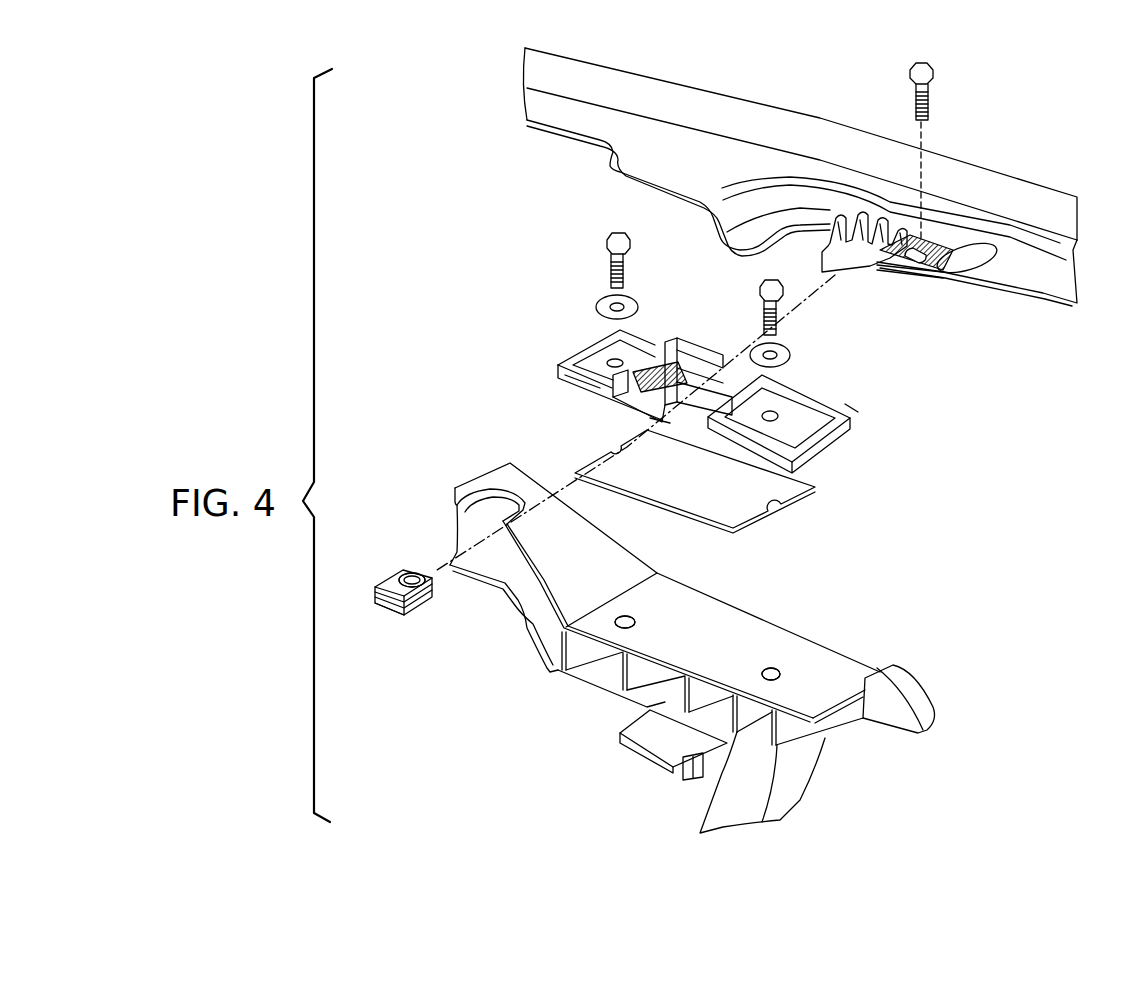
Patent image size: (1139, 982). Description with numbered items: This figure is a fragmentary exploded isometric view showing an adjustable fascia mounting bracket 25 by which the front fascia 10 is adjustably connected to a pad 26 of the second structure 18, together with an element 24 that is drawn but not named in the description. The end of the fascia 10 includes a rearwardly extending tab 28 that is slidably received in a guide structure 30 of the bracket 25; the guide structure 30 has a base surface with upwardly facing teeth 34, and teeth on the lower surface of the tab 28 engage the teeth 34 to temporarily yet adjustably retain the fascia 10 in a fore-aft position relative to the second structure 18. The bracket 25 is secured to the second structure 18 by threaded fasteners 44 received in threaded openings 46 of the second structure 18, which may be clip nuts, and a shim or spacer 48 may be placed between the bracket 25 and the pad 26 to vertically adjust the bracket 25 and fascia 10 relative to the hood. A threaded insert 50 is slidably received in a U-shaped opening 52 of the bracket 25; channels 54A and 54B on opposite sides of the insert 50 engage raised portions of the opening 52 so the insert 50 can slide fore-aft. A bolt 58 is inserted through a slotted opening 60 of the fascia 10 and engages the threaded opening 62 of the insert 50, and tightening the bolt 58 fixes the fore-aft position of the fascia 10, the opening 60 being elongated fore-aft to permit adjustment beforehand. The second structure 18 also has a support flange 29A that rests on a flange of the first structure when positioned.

The fascia 10 is at (1007, 174).
The second structure 18 is at (928, 688).
The mounting block 24 is at (612, 360).
The bracket 25 is at (843, 404).
The pad 26 is at (715, 625).
The tab 28 is at (838, 278).
The support flange 29A is at (683, 770).
The guide structure 30 is at (625, 404).
The teeth 34 is at (683, 358).
The threaded fasteners 44 is at (600, 240).
The threaded openings 46 is at (622, 624).
The shim 48 is at (815, 487).
The threaded insert 50 is at (410, 620).
The U-shaped opening 52 is at (650, 424).
The channel 54A is at (430, 595).
The channel 54B is at (393, 570).
The bolt 58 is at (935, 70).
The slotted opening 60 is at (906, 272).
The threaded opening 62 is at (428, 572).